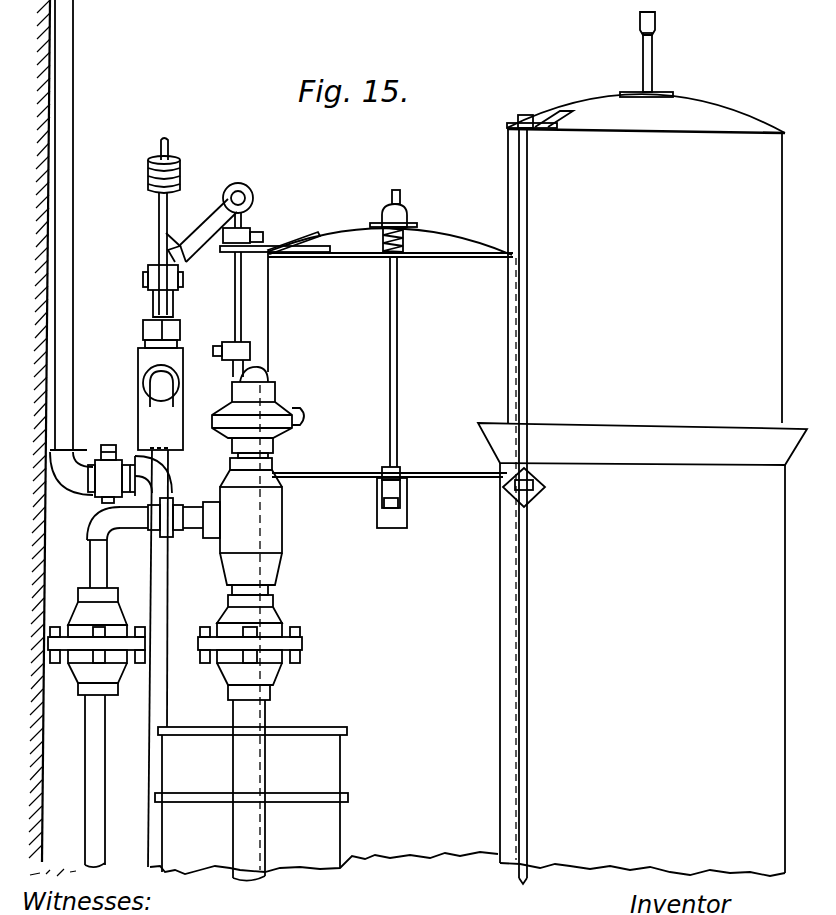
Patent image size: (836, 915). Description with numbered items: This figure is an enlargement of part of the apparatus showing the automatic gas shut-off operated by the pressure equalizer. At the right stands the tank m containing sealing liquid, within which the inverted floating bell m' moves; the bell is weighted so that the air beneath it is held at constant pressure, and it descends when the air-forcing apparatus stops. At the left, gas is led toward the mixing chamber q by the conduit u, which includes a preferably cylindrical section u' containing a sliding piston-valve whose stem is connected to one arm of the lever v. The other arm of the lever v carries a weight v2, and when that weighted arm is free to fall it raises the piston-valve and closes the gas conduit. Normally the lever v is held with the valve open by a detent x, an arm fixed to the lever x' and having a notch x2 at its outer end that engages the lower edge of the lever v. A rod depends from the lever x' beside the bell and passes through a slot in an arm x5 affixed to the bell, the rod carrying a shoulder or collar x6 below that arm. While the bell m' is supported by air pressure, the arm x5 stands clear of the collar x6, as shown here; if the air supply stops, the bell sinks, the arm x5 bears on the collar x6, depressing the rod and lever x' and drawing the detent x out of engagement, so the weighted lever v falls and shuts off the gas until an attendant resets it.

The lever v is at (159, 216).
The weight v2 is at (181, 167).
The detent x is at (253, 274).
The lever x' is at (216, 222).
The notch x2 is at (162, 246).
The arm x5 is at (264, 242).
The shoulder or collar x6 is at (250, 348).
The conduit u is at (134, 433).
The section u' is at (143, 385).
The mixing chamber q is at (273, 525).
The tank m is at (521, 499).
The inverted floating tank or bell m' is at (390, 359).